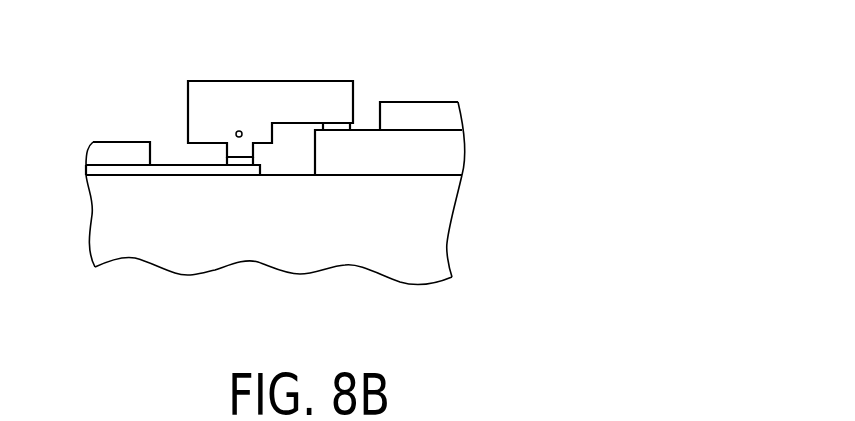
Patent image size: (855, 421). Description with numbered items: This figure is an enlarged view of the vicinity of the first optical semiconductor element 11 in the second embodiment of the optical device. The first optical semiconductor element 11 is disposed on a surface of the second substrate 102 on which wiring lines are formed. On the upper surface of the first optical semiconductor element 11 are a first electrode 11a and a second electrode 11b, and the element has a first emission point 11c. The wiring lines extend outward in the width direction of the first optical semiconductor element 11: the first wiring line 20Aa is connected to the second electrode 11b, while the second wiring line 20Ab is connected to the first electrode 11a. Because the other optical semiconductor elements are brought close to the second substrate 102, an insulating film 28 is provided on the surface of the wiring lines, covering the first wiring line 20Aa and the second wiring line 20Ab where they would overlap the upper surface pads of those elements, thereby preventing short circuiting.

The first optical semiconductor element 11 is at (258, 97).
The first electrode 11a is at (336, 126).
The second electrode 11b is at (240, 170).
The first emission point 11c is at (238, 130).
The insulating film 28 is at (117, 155).
The first wiring line 20Aa is at (175, 170).
The second wiring line 20Ab is at (395, 157).
The second substrate 102 is at (310, 247).